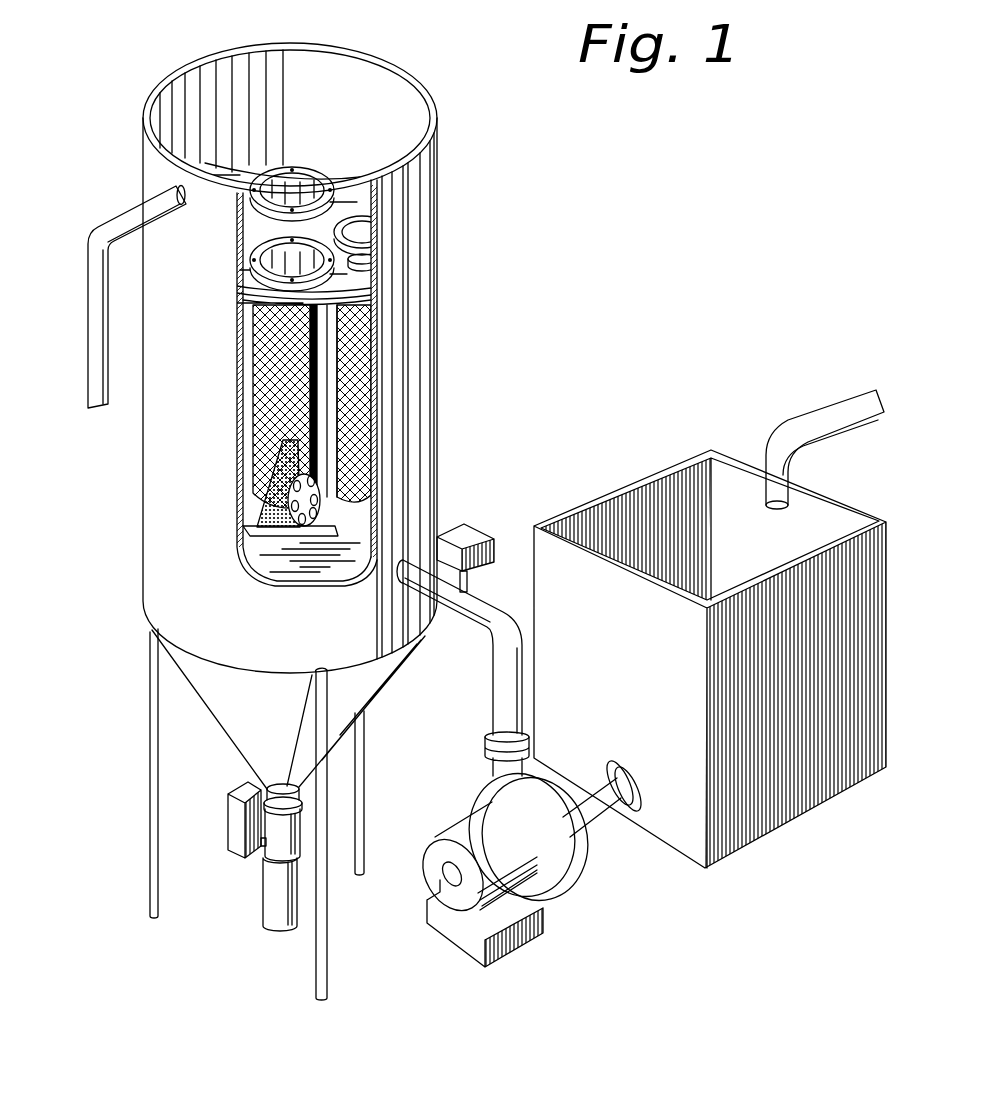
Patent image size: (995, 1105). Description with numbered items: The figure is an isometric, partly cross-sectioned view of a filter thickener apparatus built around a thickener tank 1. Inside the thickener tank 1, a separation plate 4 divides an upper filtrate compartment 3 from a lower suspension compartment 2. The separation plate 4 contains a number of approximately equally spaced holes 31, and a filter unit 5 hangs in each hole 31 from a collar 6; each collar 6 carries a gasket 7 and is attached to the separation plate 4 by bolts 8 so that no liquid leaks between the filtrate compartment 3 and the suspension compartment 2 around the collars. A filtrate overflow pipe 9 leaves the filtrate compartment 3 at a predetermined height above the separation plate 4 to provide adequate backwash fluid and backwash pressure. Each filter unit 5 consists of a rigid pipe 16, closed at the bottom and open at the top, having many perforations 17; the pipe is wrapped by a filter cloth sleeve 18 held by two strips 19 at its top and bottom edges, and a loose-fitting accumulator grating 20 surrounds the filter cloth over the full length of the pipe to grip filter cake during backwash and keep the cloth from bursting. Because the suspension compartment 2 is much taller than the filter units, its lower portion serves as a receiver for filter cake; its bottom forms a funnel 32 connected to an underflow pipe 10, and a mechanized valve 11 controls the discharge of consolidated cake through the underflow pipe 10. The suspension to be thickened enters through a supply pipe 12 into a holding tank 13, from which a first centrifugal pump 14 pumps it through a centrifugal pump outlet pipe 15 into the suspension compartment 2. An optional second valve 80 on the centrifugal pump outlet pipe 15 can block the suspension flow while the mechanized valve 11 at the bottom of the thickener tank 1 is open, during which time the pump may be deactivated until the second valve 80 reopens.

The thickener tank 1 is at (428, 333).
The suspension compartment 2 is at (374, 445).
The filtrate compartment 3 is at (405, 100).
The separation plate 4 is at (256, 309).
The filter unit 5 is at (258, 447).
The collar 6 is at (340, 252).
The gasket 7 is at (352, 265).
The bolts 8 is at (246, 290).
The filtrate overflow pipe 9 is at (95, 318).
The underflow pipe 10 is at (270, 912).
The mechanized valve 11 is at (232, 830).
The supply pipe 12 is at (806, 418).
The holding tank 13 is at (753, 828).
The first centrifugal pump 14 is at (524, 871).
The centrifugal pump outlet pipe 15 is at (498, 643).
The rigid pipe 16 is at (293, 533).
The perforations 17 is at (322, 503).
The filter cloth sleeve 18 is at (268, 502).
The strips 19 is at (273, 528).
The accumulator grating 20 is at (262, 406).
The holes 31 is at (288, 178).
The funnel 32 is at (237, 733).
The second valve 80 is at (473, 536).